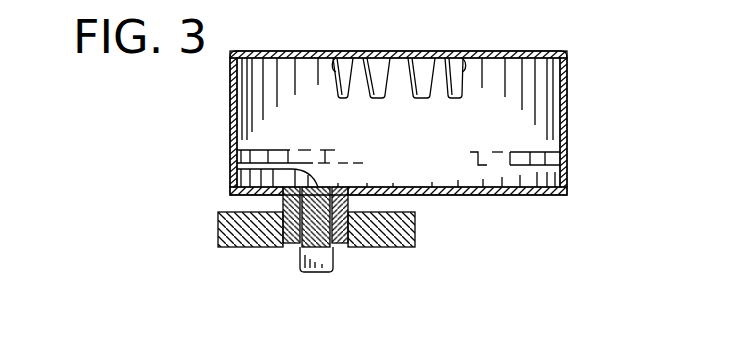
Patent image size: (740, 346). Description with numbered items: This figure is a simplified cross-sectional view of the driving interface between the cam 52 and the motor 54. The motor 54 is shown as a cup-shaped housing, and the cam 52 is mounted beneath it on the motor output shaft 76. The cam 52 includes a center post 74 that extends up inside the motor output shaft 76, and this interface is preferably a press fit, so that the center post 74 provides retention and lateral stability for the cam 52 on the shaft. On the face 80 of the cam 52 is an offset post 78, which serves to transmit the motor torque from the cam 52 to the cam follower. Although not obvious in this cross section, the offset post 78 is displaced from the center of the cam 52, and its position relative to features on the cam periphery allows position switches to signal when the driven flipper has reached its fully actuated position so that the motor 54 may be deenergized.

The motor 54 is at (540, 82).
The center post 74 is at (233, 170).
The motor output shaft 76 is at (283, 207).
The face 80 is at (258, 248).
The cam 52 is at (377, 242).
The offset post 78 is at (317, 273).